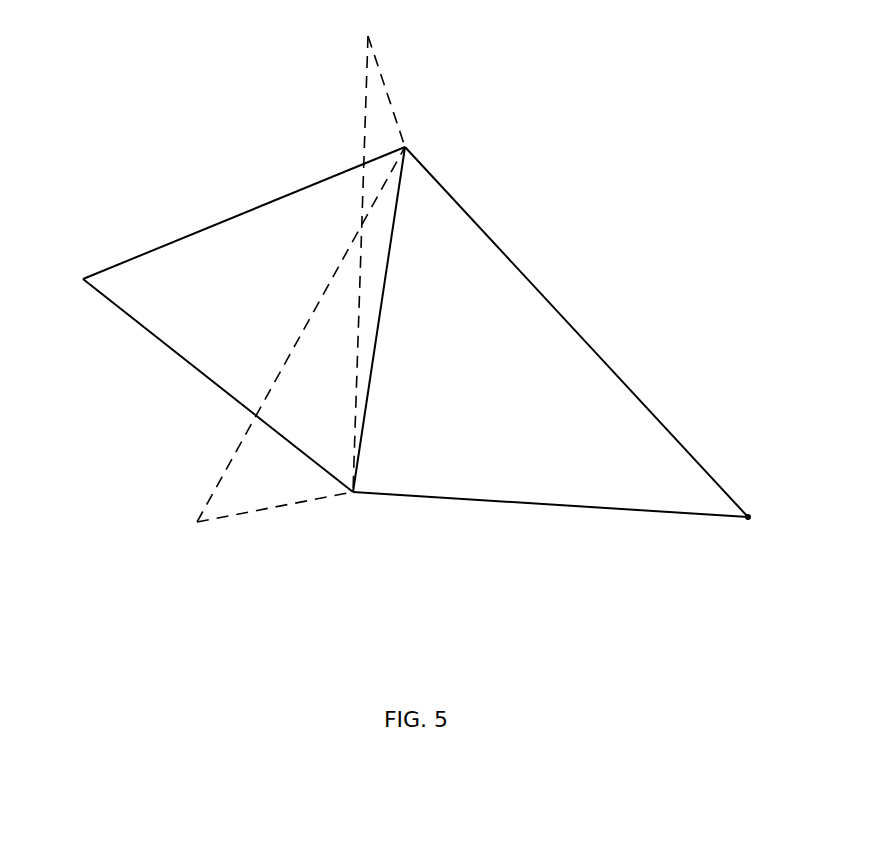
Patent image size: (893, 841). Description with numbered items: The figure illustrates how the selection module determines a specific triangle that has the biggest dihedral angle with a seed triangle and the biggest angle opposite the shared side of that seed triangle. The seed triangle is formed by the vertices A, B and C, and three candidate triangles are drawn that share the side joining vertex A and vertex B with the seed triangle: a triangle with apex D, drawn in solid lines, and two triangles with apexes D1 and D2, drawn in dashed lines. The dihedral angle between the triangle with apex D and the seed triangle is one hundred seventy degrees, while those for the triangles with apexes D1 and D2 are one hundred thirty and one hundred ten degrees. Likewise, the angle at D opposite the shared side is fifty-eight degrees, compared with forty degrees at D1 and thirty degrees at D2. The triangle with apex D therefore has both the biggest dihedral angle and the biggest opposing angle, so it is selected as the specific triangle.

The vertex A is at (546, 520).
The vertex B is at (550, 309).
The vertex C is at (762, 519).
The vertex D is at (230, 319).
The vertex D1 is at (376, 247).
The vertex D2 is at (282, 355).